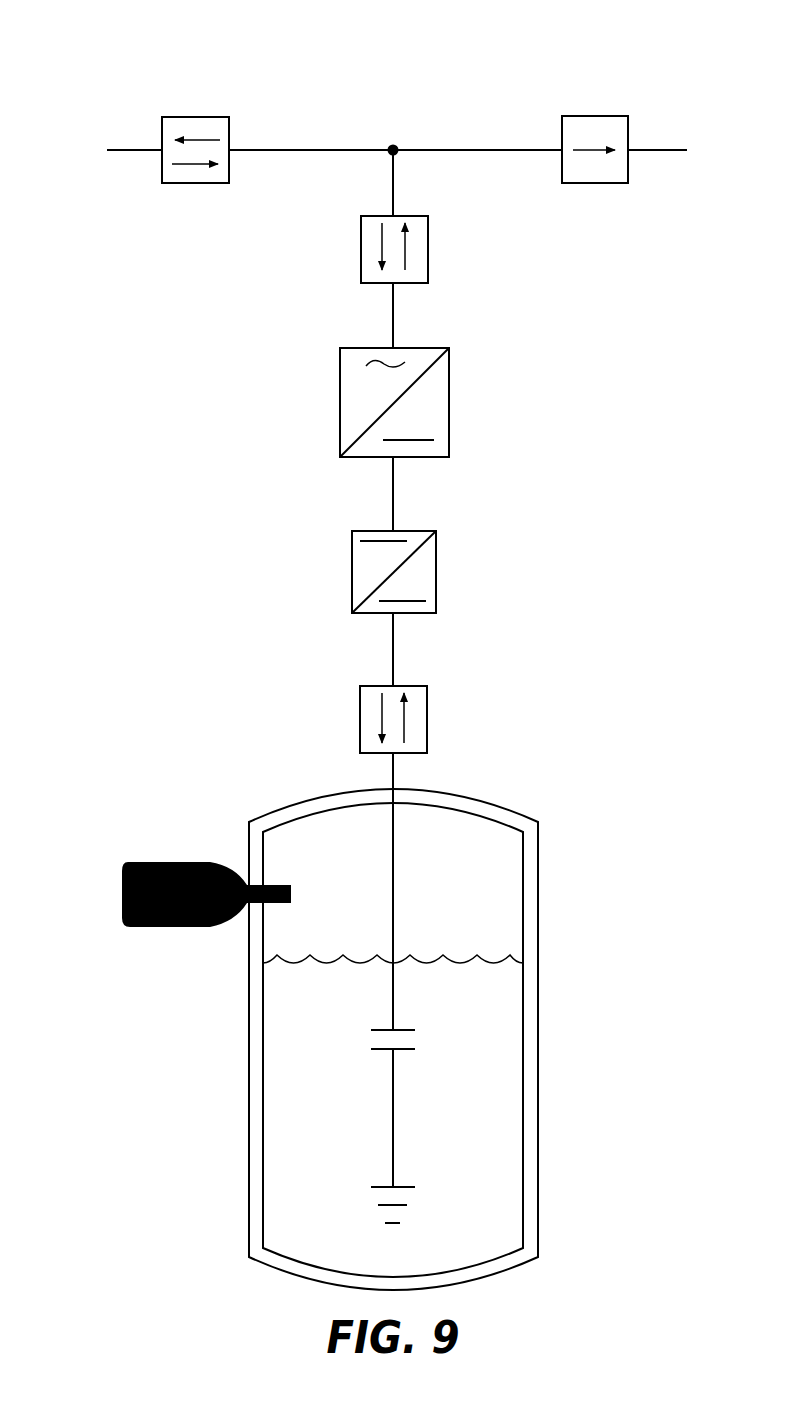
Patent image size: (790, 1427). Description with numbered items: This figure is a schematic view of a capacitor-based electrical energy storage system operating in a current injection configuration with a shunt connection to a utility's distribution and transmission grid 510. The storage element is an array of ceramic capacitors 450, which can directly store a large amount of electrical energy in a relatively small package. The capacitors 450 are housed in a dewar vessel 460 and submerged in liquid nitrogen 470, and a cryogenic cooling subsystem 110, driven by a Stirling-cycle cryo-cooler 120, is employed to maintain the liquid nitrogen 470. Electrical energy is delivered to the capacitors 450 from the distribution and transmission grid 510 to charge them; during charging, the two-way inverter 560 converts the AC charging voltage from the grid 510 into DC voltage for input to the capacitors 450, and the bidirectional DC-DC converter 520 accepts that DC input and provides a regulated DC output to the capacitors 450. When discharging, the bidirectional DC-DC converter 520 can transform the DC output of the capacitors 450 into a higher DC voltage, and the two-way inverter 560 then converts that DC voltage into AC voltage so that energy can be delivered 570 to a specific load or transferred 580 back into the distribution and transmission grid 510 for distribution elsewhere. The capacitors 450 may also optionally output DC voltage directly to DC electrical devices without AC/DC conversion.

The cryogenic cooling subsystem 110 is at (182, 825).
The Stirling-cycle cryo-cooler 120 is at (163, 927).
The ceramic capacitors 450 is at (437, 1059).
The dewar vessel 460 is at (538, 897).
The liquid nitrogen 470 is at (300, 1197).
The distribution and transmission grid 510 is at (318, 150).
The bidirectional DC-DC converter 520 is at (352, 584).
The two-way inverter 560 is at (358, 387).
The delivery to a specific load 570 is at (595, 183).
The transfer back to the grid 580 is at (161, 167).